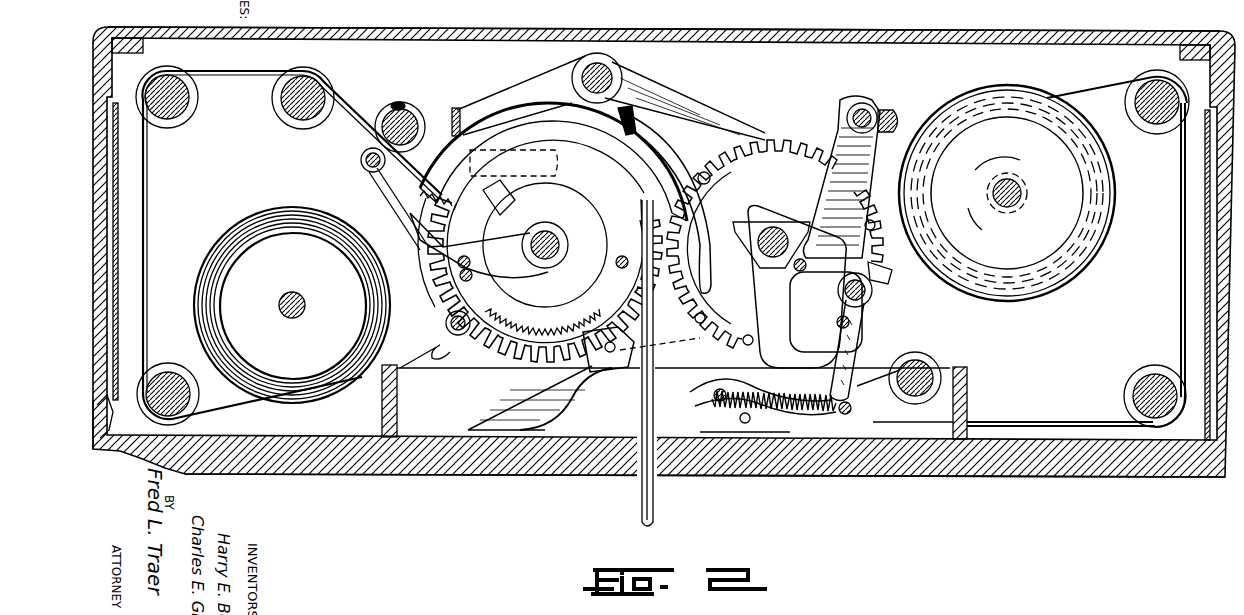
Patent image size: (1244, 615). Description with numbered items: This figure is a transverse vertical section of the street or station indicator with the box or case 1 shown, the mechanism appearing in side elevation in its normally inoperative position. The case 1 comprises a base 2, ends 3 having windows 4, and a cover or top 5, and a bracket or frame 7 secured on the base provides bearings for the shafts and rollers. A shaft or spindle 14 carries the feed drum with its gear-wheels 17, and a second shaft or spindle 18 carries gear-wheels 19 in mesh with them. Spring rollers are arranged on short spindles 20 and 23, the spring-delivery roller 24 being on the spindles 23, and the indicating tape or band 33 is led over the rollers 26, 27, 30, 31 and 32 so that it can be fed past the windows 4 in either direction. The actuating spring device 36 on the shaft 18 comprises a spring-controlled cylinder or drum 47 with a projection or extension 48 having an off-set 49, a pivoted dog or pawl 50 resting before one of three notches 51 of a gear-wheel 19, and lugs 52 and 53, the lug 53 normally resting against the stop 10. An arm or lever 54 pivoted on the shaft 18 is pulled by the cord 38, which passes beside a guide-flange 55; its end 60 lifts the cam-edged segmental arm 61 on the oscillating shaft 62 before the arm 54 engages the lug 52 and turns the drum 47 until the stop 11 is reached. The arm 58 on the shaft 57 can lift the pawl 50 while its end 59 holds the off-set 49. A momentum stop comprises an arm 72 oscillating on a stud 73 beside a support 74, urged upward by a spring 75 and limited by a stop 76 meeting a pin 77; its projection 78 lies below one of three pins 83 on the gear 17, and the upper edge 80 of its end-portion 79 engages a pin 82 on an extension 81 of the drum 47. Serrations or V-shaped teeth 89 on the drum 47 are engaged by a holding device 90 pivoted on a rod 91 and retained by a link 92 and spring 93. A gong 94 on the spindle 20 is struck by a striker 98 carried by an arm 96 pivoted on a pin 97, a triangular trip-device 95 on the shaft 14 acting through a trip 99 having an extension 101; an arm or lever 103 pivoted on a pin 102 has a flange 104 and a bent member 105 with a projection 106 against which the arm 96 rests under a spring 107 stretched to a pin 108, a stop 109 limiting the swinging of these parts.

The box or case 1 is at (664, 238).
The base 2 is at (1062, 476).
The ends 3 is at (100, 400).
The windows 4 is at (118, 285).
The cover or top 5 is at (893, 30).
The bracket or frame 7 is at (1069, 355).
The stop or projection 10 is at (472, 278).
The stop or projection 11 is at (616, 264).
The shaft or spindle 14 is at (773, 226).
The gear-wheels 17 is at (790, 138).
The second shaft or spindle 18 is at (549, 232).
The toothed or gear-wheels 19 is at (490, 370).
The short spindles 20 is at (1022, 194).
The short spindles 23 is at (301, 298).
The spring roller 24 is at (292, 305).
The roller 26 is at (1162, 118).
The roller 27 is at (1150, 382).
The roller 30 is at (290, 114).
The roller 31 is at (182, 106).
The roller 32 is at (180, 374).
The indicating tape or band 33 is at (232, 246).
The actuating spring device 36 is at (545, 280).
The pull-cord 38 is at (642, 500).
The spring-controlled cylinder or drum 47 is at (549, 245).
The projection or extension 48 is at (420, 196).
The off-set 49 is at (412, 120).
The dog or pawl 50 is at (522, 130).
The notches 51 is at (560, 203).
The lug or projection 52 is at (505, 192).
The lug or projection 53 is at (488, 242).
The arm or lever 54 is at (514, 272).
The guide-flange 55 is at (640, 186).
The shaft or spindle 57 is at (622, 73).
The arm 58 is at (533, 84).
The end 59 is at (457, 108).
The end 60 is at (392, 202).
The segmental arm 61 is at (690, 170).
The shaft or spindle 62 is at (392, 104).
The arm 72 is at (702, 382).
The stud or rod 73 is at (936, 384).
The frame or support 74 is at (384, 402).
The spring 75 is at (862, 386).
The stop 76 is at (760, 410).
The projection or pin 77 is at (714, 340).
The projection 78 is at (748, 334).
The end-portion 79 is at (530, 431).
The upper edge 80 is at (546, 390).
The extension 81 is at (576, 398).
The pin or projection 82 is at (610, 366).
The pins or stops 83 is at (711, 177).
The serrations or V-shaped teeth 89 is at (542, 323).
The holding device 90 is at (490, 338).
The rod or pin 91 is at (457, 335).
The link 92 is at (437, 362).
The spring 93 is at (425, 288).
The gong 94 is at (978, 88).
The trip-device 95 is at (824, 234).
The arm 96 is at (866, 334).
The pin 97 is at (873, 294).
The striker 98 is at (889, 118).
The trip 99 is at (826, 312).
The extension or projection 101 is at (893, 272).
The pin 102 is at (862, 108).
The arm or lever 103 is at (842, 183).
The flange or shoulder 104 is at (897, 286).
The lower part or member 105 is at (766, 302).
The projection 106 is at (845, 415).
The spring 107 is at (748, 424).
The pin 108 is at (720, 402).
The stop or projection 109 is at (800, 272).